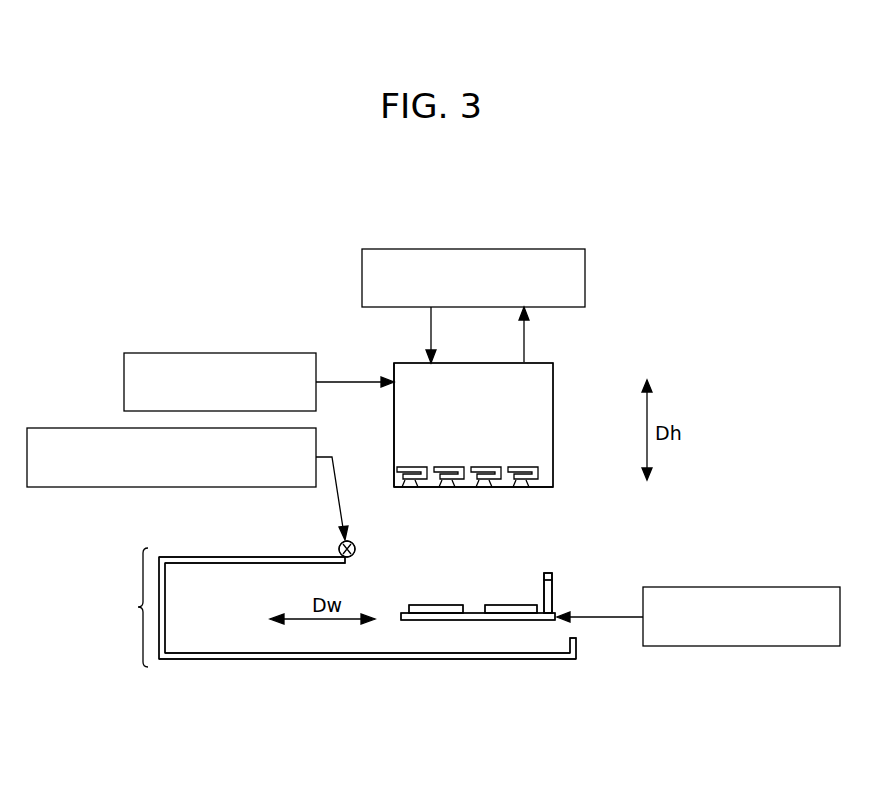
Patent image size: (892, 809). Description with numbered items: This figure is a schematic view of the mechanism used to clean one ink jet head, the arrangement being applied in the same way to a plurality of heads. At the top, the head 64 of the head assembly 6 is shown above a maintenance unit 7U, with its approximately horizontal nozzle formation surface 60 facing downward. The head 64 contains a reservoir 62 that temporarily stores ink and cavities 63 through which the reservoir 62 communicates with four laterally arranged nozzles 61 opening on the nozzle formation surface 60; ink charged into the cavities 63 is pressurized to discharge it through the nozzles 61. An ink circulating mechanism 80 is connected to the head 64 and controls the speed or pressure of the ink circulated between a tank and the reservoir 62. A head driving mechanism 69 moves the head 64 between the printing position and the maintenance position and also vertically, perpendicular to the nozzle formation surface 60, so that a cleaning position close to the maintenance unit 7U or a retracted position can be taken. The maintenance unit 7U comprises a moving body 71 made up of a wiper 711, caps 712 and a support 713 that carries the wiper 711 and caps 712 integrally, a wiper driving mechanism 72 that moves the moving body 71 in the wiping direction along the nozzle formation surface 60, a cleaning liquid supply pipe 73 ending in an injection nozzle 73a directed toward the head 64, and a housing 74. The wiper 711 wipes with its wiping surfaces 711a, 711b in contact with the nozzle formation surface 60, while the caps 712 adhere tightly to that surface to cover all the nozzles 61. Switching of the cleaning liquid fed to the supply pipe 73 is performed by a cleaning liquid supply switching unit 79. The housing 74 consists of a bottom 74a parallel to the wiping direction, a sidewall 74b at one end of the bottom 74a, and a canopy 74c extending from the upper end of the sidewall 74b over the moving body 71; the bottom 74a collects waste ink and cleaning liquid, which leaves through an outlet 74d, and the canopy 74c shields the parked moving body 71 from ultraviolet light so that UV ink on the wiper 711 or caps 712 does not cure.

The ink circulating mechanism 80 is at (485, 249).
The head unit 6 is at (580, 355).
The reservoir 62 is at (537, 413).
The head 64 is at (394, 440).
The cavities 63 is at (462, 472).
The nozzles 61 is at (410, 488).
The nozzle formation surface 60 is at (554, 488).
The head driving mechanism 69 is at (202, 353).
The cleaning liquid supply switching unit 79 is at (74, 428).
The cleaning liquid supply pipe 73 is at (339, 548).
The injection nozzle 73a is at (355, 547).
The housing 74 is at (232, 695).
The bottom 74a is at (365, 660).
The sidewall 74b is at (166, 607).
The canopy 74c is at (190, 557).
The outlet 74d is at (550, 660).
The maintenance unit 7U is at (127, 607).
The moving body 71 is at (477, 568).
The wiper 711 is at (546, 573).
The wiping surface 711a is at (553, 592).
The wiping surface 711b is at (553, 578).
The caps 712 is at (440, 605).
The support 713 is at (480, 620).
The wiper driving mechanism 72 is at (741, 587).